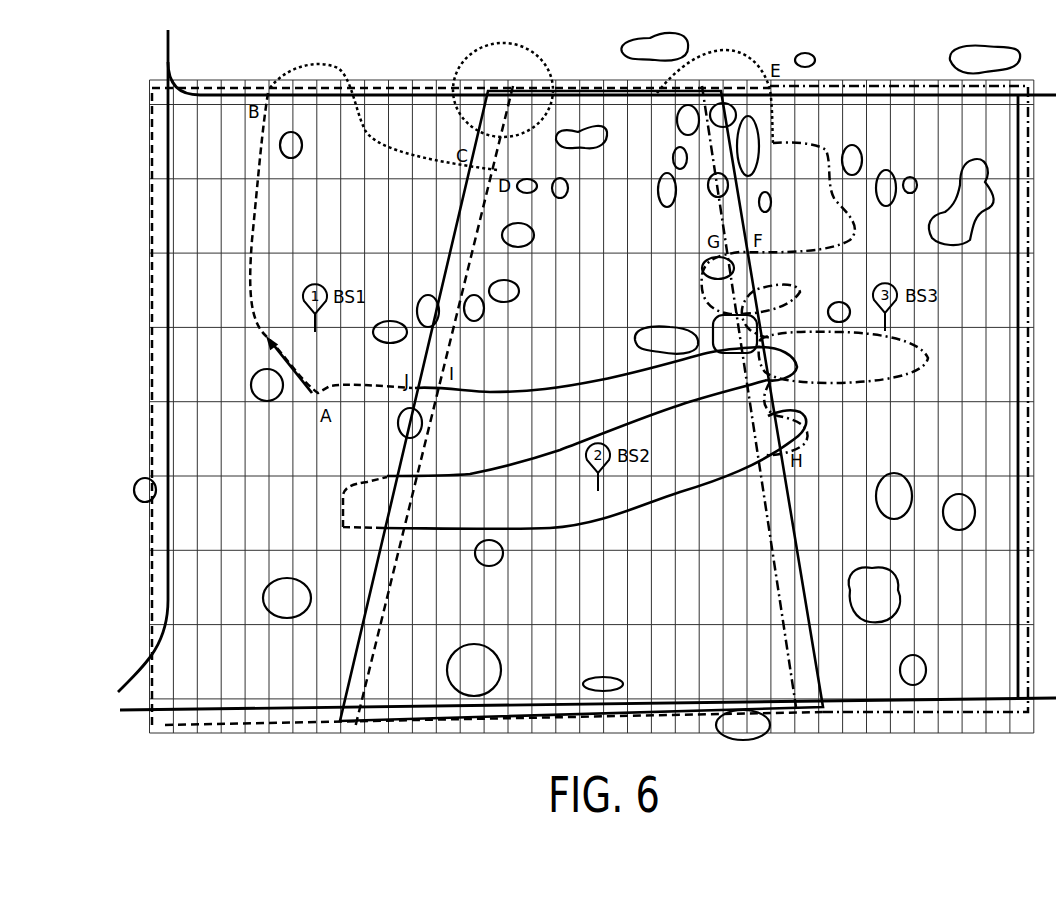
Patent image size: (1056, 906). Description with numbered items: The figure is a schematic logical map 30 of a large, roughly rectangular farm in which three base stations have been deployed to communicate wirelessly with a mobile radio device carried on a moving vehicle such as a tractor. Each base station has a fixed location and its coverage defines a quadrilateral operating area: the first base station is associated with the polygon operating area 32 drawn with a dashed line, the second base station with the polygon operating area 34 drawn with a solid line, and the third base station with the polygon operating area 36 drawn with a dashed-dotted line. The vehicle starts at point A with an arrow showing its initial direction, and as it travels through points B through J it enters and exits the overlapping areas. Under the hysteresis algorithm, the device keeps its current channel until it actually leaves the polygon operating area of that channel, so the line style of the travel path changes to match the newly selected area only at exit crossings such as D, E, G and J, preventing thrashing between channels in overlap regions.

The logical map 30 is at (113, 107).
The polygon operating area 32 is at (258, 727).
The polygon operating area 34 is at (453, 718).
The polygon operating area 36 is at (922, 713).